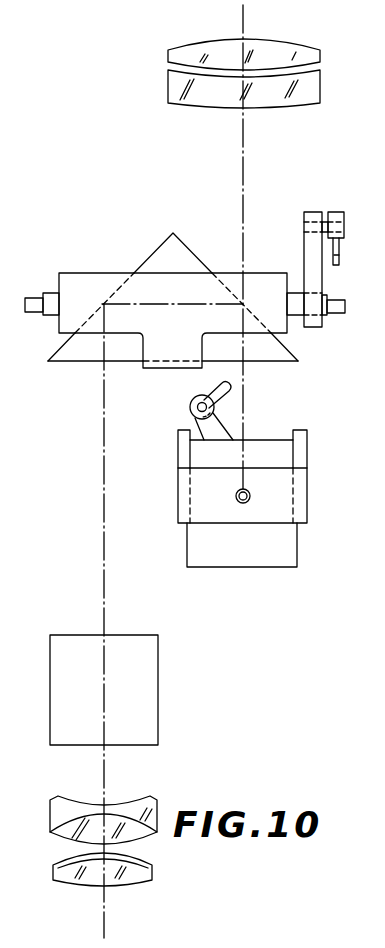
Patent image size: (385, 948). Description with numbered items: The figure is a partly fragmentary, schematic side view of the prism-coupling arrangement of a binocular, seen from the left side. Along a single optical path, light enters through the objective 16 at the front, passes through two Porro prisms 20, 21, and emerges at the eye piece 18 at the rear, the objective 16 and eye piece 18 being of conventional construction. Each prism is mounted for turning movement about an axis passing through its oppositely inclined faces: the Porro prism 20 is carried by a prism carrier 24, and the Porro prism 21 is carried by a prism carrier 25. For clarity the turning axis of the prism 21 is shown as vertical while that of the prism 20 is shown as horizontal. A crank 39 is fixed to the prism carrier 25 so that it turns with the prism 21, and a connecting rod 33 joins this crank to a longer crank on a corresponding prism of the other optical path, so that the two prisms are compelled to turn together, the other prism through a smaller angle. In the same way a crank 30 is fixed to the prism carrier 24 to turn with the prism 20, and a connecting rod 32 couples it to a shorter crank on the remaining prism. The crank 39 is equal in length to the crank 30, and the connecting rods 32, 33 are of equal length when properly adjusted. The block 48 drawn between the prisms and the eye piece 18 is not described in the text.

The objective 16 is at (176, 50).
The eye piece 18 is at (56, 812).
The Porro prism 20 is at (256, 562).
The Porro prism 21 is at (78, 354).
The prism carrier 24 is at (283, 508).
The prism carrier 25 is at (190, 301).
The crank 30 is at (217, 425).
The connecting rod 32 is at (213, 393).
The connecting rod 33 is at (340, 254).
The crank 39 is at (305, 249).
The block 48 is at (138, 696).